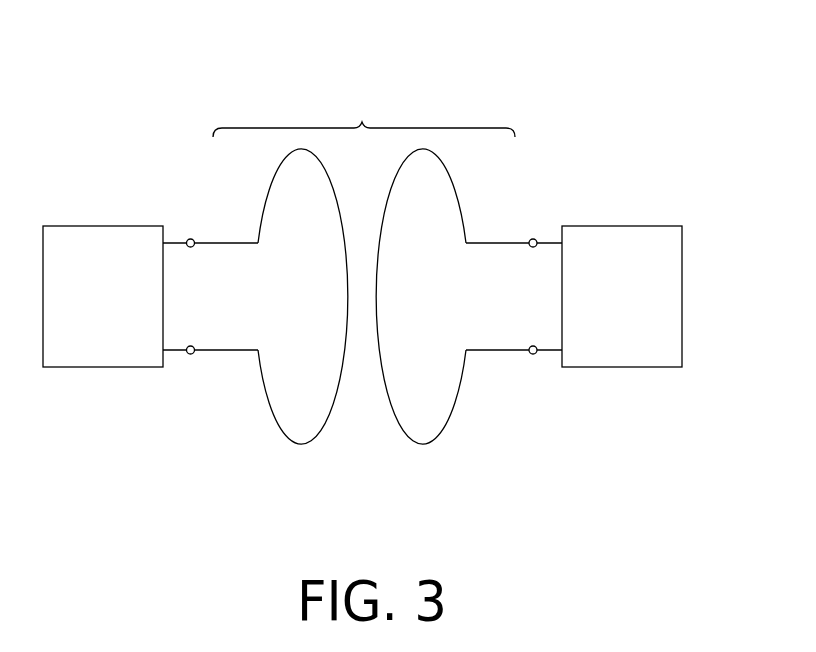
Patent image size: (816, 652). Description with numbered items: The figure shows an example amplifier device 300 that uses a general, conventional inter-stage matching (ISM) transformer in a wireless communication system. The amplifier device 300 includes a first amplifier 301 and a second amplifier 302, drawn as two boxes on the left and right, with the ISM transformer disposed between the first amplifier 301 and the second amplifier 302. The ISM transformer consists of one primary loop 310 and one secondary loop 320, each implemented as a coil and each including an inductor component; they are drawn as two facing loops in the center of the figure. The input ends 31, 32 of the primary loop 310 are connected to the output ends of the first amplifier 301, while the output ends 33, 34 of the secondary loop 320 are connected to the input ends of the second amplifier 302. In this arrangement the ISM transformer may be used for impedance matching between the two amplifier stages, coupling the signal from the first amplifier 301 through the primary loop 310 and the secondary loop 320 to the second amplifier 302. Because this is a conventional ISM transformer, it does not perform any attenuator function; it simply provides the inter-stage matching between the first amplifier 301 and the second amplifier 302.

The amplifier device 300 is at (383, 68).
The first amplifier 301 is at (102, 225).
The second amplifier 302 is at (620, 225).
The primary loop 310 is at (268, 482).
The secondary loop 320 is at (461, 482).
The input end 31 is at (190, 238).
The input end 32 is at (190, 355).
The output end 33 is at (533, 238).
The output end 34 is at (533, 355).